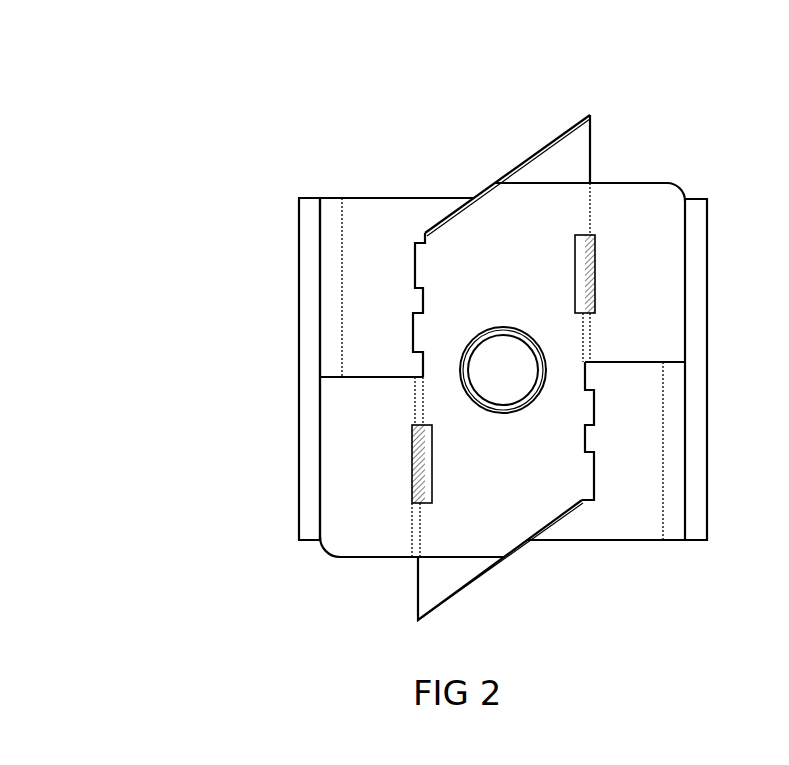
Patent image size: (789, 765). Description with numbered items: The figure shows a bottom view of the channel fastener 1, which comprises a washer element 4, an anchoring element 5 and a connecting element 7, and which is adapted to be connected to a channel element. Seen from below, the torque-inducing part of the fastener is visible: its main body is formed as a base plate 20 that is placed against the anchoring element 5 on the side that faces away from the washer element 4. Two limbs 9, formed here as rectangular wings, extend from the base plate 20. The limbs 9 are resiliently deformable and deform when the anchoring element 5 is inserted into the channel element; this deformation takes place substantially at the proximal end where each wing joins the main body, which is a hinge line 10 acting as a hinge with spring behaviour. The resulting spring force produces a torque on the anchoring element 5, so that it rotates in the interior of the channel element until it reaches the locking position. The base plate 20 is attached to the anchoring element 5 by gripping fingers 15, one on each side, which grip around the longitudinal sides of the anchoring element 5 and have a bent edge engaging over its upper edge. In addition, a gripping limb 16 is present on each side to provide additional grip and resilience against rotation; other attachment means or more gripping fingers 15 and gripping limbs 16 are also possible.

The channel fastener 1 is at (341, 114).
The washer element 4 is at (297, 239).
The anchoring element 5 is at (556, 167).
The connecting element 7 is at (508, 377).
The limbs 9 is at (642, 282).
The hinge line 10 is at (598, 205).
The gripping fingers 15 is at (418, 337).
The gripping limb 16 is at (415, 258).
The base plate 20 is at (507, 500).